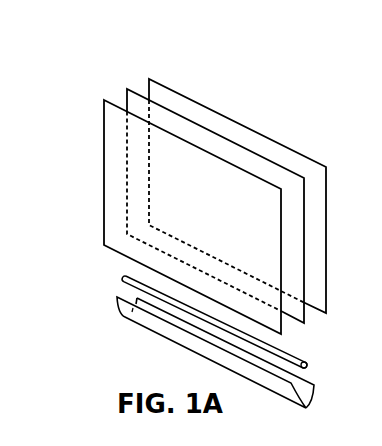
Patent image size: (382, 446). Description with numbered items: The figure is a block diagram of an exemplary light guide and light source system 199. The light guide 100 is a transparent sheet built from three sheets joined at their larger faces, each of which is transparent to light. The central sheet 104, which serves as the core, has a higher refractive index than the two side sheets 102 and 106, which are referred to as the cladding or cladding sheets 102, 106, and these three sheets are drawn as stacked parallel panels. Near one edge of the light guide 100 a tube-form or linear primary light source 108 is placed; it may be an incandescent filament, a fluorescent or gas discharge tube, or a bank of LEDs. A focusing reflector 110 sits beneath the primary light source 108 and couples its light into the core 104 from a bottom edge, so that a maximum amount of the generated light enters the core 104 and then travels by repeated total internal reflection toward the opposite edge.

The light guide 100 is at (112, 21).
The cladding sheet 102 is at (146, 77).
The central sheet (core) 104 is at (117, 86).
The cladding sheet 106 is at (95, 100).
The primary light source 108 is at (117, 268).
The focusing reflector 110 is at (114, 298).
The light guide and light source system 199 is at (286, 45).